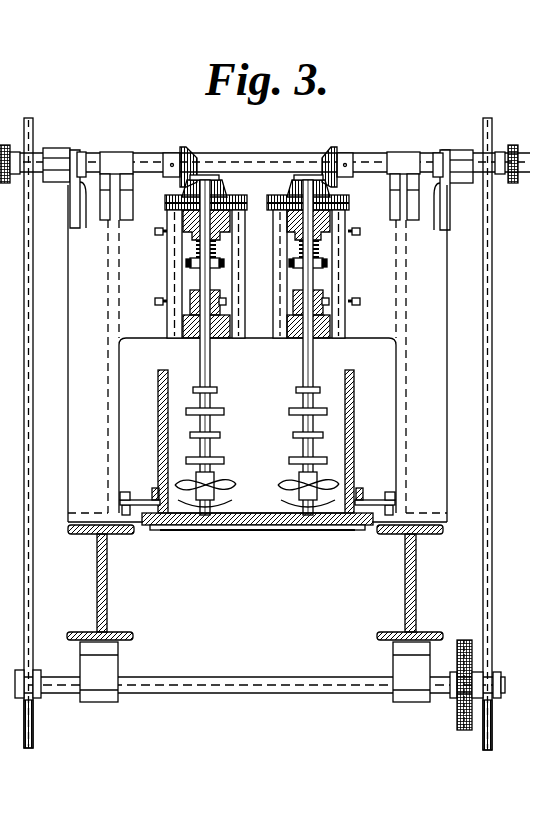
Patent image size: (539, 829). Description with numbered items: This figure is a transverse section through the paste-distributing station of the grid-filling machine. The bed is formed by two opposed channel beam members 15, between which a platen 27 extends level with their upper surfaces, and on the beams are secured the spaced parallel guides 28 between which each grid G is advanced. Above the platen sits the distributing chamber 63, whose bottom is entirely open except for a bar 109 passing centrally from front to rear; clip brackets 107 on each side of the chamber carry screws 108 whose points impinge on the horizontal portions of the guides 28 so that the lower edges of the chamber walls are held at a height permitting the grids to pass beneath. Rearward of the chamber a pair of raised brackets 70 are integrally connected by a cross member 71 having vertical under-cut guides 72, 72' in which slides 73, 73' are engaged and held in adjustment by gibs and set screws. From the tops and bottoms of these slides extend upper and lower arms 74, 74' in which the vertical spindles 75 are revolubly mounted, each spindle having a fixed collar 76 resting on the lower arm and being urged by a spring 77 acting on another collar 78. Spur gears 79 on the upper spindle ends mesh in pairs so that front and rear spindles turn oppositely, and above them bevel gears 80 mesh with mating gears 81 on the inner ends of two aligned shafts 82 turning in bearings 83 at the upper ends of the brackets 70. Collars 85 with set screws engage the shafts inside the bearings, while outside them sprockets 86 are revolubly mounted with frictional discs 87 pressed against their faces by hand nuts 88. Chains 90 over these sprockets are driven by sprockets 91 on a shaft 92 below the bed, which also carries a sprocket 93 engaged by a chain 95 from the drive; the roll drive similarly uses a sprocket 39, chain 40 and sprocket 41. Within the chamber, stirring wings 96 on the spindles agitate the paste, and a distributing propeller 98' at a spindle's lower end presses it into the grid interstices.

The channel beam member 15 is at (108, 596).
The platen 27 is at (282, 528).
The guide 28 is at (143, 530).
The sprocket 39 is at (7, 506).
The chain 40 is at (7, 586).
The sprocket 41 is at (7, 734).
The distributing chamber 63 is at (158, 396).
The raised bracket 70 is at (72, 354).
The cross member 71 is at (357, 337).
The vertical under-cut guide 72 is at (359, 274).
The vertical under-cut guide 72' is at (158, 274).
The slide 73 is at (330, 274).
The slide 73' is at (189, 274).
The upper arm 74 is at (337, 267).
The lower arm 74' is at (184, 266).
The vertical spindle 75 is at (212, 353).
The fixed collar 76 is at (220, 292).
The spring 77 is at (215, 251).
The collar 78 is at (222, 263).
The spur gear 79 is at (240, 200).
The bevel gear 80 is at (222, 180).
The mating gear 81 is at (195, 150).
The alined shaft 82 is at (150, 160).
The bearing 83 is at (56, 184).
The collar 85 is at (85, 155).
The sprocket 86 is at (35, 150).
The frictional disc 87 is at (15, 152).
The hand nut 88 is at (513, 183).
The chain 90 is at (26, 308).
The sprocket 91 is at (33, 728).
The shaft 92 is at (245, 677).
The sprocket 93 is at (457, 720).
The chain 95 is at (468, 640).
The stirring wing 96 is at (288, 390).
The distributing propeller 98' is at (257, 487).
The clip bracket 107 is at (140, 500).
The screw 108 is at (122, 497).
The bar 109 is at (250, 532).
The grid G is at (222, 532).